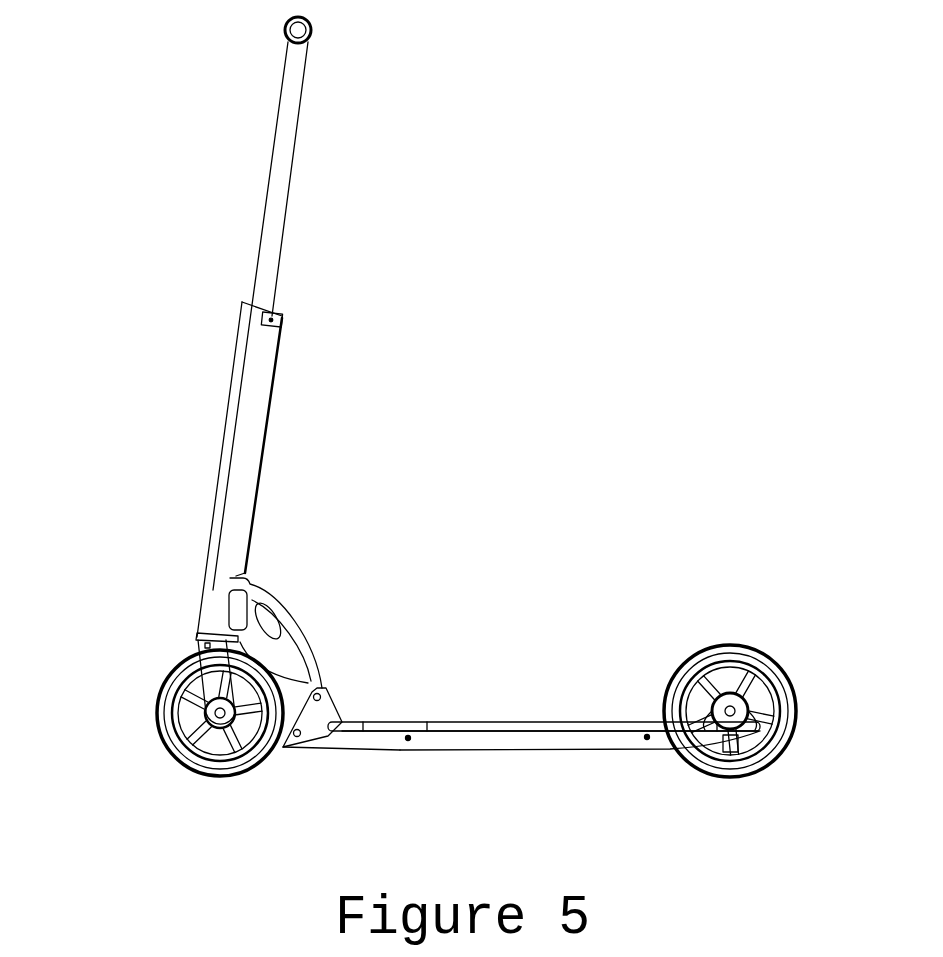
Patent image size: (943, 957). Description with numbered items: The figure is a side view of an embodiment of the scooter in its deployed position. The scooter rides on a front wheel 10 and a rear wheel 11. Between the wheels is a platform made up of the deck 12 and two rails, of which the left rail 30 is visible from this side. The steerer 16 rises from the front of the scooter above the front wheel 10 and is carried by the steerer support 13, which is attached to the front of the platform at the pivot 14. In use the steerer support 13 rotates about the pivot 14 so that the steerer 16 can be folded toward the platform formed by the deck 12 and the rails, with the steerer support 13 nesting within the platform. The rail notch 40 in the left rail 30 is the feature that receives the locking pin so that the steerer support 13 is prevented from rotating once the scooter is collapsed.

The front wheel 10 is at (167, 733).
The rear wheel 11 is at (783, 666).
The deck 12 is at (506, 706).
The steerer support 13 is at (303, 633).
The pivot 14 is at (293, 743).
The steerer 16 is at (285, 462).
The left rail 30 is at (597, 740).
The rail notch 40 is at (340, 753).